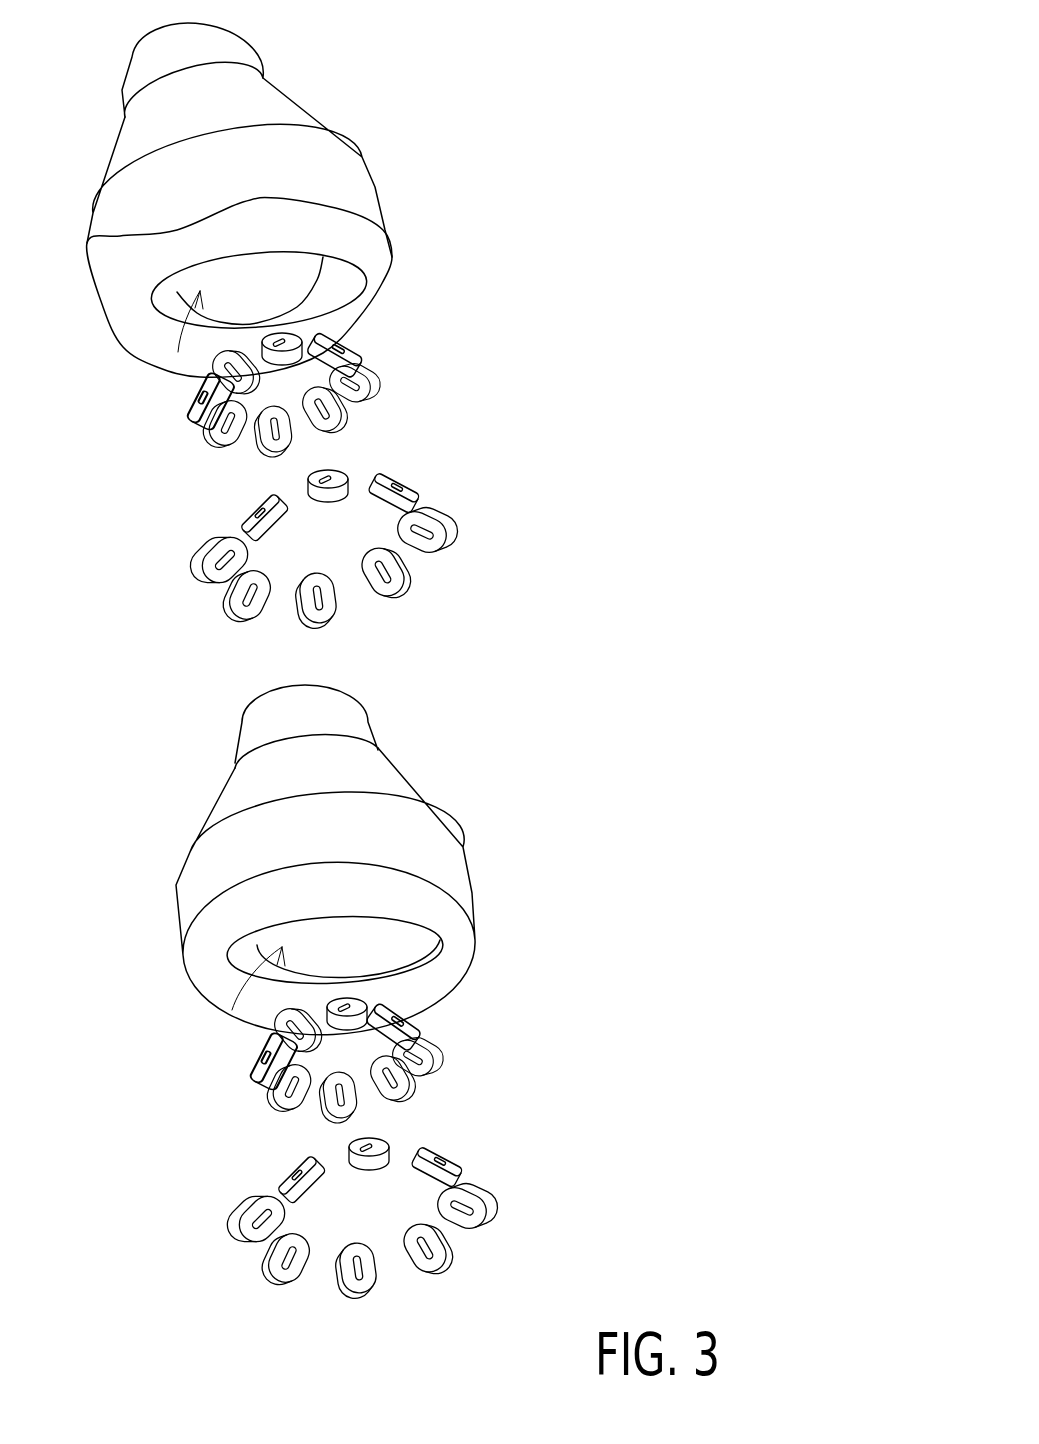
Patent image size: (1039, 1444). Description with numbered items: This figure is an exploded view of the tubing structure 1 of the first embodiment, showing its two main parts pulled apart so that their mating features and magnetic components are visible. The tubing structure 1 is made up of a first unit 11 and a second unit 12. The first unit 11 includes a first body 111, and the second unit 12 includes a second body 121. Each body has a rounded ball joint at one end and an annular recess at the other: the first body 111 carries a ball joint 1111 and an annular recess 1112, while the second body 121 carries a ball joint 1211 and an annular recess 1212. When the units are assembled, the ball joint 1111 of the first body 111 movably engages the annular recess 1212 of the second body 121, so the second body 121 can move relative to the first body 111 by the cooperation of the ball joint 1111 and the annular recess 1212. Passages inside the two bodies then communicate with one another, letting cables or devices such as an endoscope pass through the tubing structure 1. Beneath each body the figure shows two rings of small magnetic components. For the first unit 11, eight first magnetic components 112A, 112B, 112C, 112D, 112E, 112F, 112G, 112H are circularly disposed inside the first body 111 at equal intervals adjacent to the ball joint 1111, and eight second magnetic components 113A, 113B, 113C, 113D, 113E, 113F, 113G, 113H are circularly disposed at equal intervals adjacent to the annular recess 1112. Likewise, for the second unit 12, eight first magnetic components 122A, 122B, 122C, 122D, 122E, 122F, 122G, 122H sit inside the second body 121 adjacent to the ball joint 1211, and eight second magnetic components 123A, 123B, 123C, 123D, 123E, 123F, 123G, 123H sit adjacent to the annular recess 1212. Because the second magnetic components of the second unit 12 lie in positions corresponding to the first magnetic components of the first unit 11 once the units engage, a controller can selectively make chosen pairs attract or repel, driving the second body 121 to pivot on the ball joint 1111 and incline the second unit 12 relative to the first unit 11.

The tubing structure 1 is at (645, 42).
The first unit 11 is at (652, 870).
The second unit 12 is at (563, 201).
The first body 111 is at (375, 778).
The ball joint 1111 is at (328, 712).
The annular recess 1112 is at (232, 1010).
The second body 121 is at (275, 112).
The ball joint 1211 is at (222, 45).
The annular recess 1212 is at (178, 352).
The first magnetic component 112A is at (430, 1055).
The first magnetic component 112B is at (398, 1088).
The first magnetic component 112C is at (335, 1108).
The first magnetic component 112D is at (290, 1093).
The first magnetic component 112E is at (262, 1058).
The first magnetic component 112F is at (305, 1012).
The first magnetic component 112G is at (358, 1005).
The first magnetic component 112H is at (402, 1028).
The second magnetic component 113A is at (482, 1210).
The second magnetic component 113B is at (443, 1263).
The second magnetic component 113C is at (355, 1285).
The second magnetic component 113D is at (283, 1275).
The second magnetic component 113E is at (250, 1225).
The second magnetic component 113F is at (282, 1172).
The second magnetic component 113G is at (385, 1150).
The second magnetic component 113H is at (450, 1170).
The first magnetic component 122A is at (366, 382).
The first magnetic component 122B is at (335, 416).
The first magnetic component 122C is at (273, 450).
The first magnetic component 122D is at (232, 445).
The first magnetic component 122E is at (205, 398).
The first magnetic component 122F is at (232, 348).
The first magnetic component 122G is at (281, 337).
The first magnetic component 122H is at (340, 350).
The second magnetic component 123A is at (440, 525).
The second magnetic component 123B is at (395, 583).
The second magnetic component 123C is at (318, 618).
The second magnetic component 123D is at (250, 605).
The second magnetic component 123E is at (215, 565).
The second magnetic component 123F is at (250, 513).
The second magnetic component 123G is at (335, 470).
The second magnetic component 123H is at (405, 490).